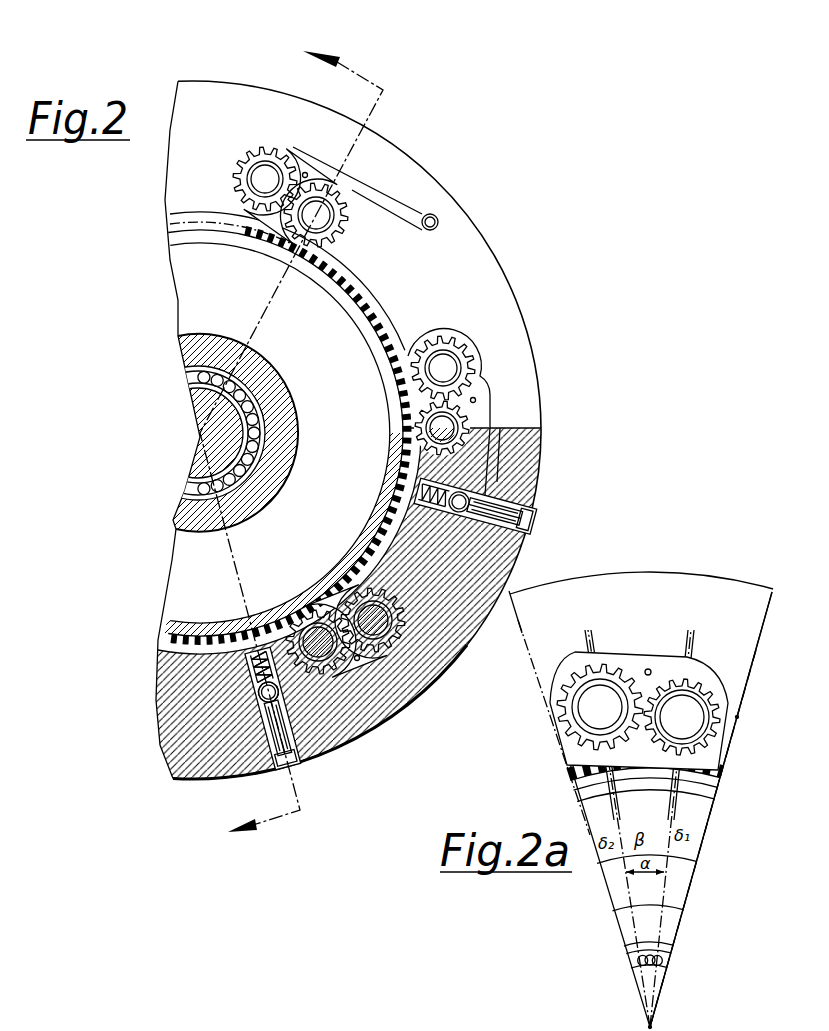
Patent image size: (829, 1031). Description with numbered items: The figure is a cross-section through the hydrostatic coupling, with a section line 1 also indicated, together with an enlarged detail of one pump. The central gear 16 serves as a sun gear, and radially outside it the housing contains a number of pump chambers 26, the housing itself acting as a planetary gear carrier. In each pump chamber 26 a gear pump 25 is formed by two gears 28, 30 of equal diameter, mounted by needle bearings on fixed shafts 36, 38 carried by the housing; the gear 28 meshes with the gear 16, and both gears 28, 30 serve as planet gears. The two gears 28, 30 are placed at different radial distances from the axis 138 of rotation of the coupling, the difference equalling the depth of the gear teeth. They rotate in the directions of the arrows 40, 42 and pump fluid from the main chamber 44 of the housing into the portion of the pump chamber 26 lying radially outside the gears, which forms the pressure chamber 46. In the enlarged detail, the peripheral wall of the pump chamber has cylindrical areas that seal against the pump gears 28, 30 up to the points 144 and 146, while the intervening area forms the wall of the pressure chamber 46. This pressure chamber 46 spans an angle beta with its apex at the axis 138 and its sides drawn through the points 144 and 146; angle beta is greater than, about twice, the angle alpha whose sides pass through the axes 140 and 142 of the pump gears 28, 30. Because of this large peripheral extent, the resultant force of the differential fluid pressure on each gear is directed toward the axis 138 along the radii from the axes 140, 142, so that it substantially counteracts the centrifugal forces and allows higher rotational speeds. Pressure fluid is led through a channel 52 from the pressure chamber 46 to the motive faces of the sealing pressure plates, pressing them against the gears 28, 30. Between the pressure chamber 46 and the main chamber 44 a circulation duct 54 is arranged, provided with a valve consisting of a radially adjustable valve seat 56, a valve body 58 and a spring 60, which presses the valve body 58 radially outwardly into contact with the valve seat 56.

In FIG. 2, the section line I-I 1 is at (291, 439).
In FIG. 2, the gear 16 is at (383, 500).
In FIG. 2, the gear pump 25 is at (322, 230).
In FIG. 2a, the gear pump 25 is at (603, 675).
In FIG. 2, the pump chamber 26 is at (287, 205).
In FIG. 2, the gear 28 is at (483, 438).
In FIG. 2, the gear 30 is at (470, 368).
In FIG. 2, the fixed shaft 36 is at (470, 468).
In FIG. 2, the fixed shaft 38 is at (262, 177).
In FIG. 2, the arrow 40 is at (290, 208).
In FIG. 2, the arrow 42 is at (287, 142).
In FIG. 2, the main chamber 44 is at (402, 314).
In FIG. 2, the pressure chamber 46 is at (306, 172).
In FIG. 2a, the pressure chamber 46 is at (624, 660).
In FIG. 2, the channel 52 is at (355, 170).
In FIG. 2, the circulation duct 54 is at (432, 214).
In FIG. 2, the valve seat 56 is at (300, 745).
In FIG. 2, the valve body 58 is at (283, 695).
In FIG. 2, the spring 60 is at (258, 655).
In FIG. 2a, the axis of rotation 138 is at (668, 1018).
In FIG. 2a, the axis of pump gear 140 is at (697, 680).
In FIG. 2a, the axis of pump gear 142 is at (598, 706).
In FIG. 2a, the sealing point 144 is at (737, 718).
In FIG. 2a, the sealing point 146 is at (585, 735).